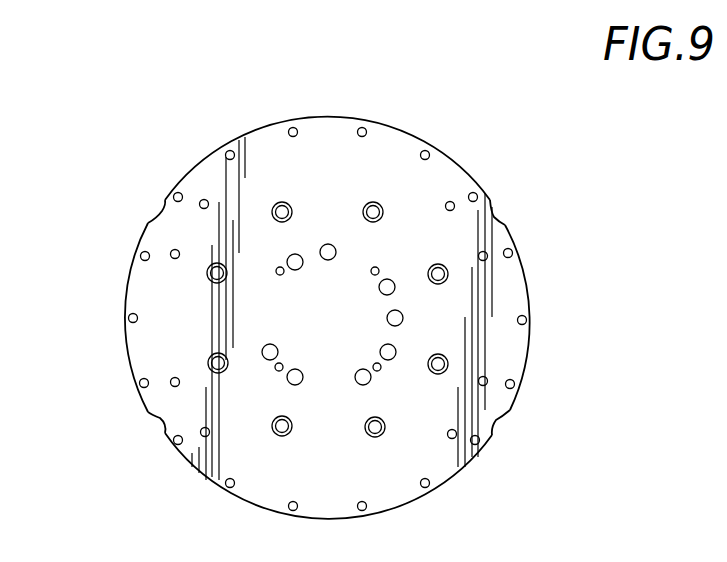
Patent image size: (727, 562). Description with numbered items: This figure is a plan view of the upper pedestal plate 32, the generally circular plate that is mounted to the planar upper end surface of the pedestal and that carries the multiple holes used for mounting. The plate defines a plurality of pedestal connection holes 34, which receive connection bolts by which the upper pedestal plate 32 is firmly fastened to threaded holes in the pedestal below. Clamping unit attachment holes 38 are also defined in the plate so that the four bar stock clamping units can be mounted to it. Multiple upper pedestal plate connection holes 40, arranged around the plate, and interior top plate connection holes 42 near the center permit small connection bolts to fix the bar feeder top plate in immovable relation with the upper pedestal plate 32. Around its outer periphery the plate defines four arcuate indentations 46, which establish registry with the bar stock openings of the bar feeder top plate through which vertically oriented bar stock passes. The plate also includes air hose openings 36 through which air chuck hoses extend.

The upper pedestal plate 32 is at (243, 133).
The pedestal connection holes 34 is at (207, 273).
The apertures 36 is at (266, 359).
The clamping unit attachment holes 38 is at (200, 205).
The upper pedestal plate connection holes 40 is at (300, 129).
The interior top plate connection holes 42 is at (371, 272).
The arcuate indentations 46 is at (495, 217).